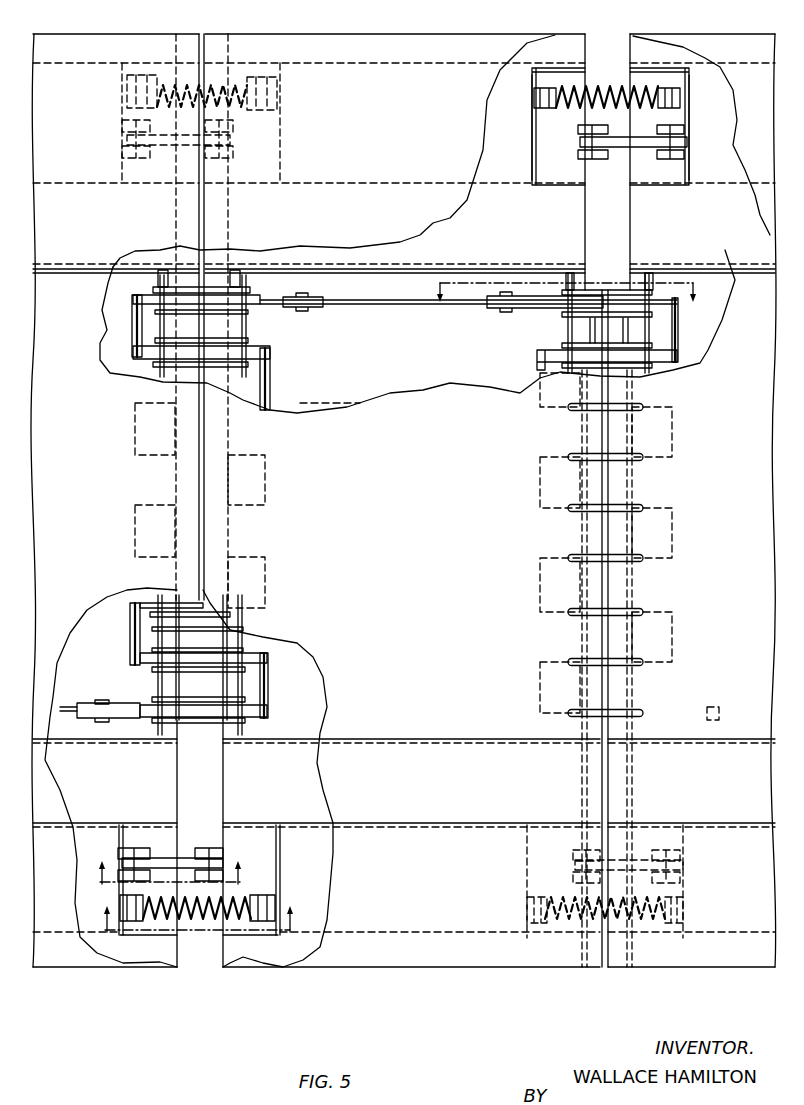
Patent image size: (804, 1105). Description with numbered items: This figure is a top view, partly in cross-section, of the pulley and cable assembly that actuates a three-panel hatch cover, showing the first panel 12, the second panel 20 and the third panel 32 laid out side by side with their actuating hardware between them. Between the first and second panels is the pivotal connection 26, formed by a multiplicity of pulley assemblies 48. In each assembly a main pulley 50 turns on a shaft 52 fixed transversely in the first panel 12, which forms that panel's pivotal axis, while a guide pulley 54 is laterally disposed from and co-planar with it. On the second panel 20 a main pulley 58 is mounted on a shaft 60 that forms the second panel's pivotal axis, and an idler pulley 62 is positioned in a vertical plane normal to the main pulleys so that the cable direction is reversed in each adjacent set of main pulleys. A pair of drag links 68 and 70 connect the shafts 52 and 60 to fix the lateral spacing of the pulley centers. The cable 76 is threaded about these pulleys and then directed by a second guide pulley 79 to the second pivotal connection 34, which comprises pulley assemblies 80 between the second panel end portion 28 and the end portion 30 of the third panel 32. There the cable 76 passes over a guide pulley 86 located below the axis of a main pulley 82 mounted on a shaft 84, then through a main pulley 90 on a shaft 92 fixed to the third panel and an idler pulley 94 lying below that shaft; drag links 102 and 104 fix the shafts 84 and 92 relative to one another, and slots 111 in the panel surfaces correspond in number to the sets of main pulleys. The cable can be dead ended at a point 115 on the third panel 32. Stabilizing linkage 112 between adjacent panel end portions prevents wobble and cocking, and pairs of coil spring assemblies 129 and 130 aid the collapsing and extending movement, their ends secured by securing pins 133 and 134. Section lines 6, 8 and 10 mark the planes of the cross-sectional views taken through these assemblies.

The section line 6- 6 is at (562, 289).
The section line 8- 8 is at (167, 874).
The section line 10- 10 is at (197, 919).
The first panel 12 is at (64, 501).
The second panel 20 is at (394, 501).
The pivotal connection 26 is at (297, 366).
The second panel end portion 28 is at (512, 224).
The end portion of the third panel 30 is at (661, 224).
The third panel 32 is at (724, 506).
The second pivotal connection 34 is at (514, 346).
The pulley assemblies 48 is at (210, 266).
The main pulley 50 is at (152, 287).
The shaft 52 is at (156, 372).
The guide pulley 54 is at (105, 706).
The main pulley 58 is at (252, 302).
The shaft 60 is at (248, 288).
The idler pulley 62 is at (132, 340).
The drag link 68 is at (215, 302).
The drag link 70 is at (185, 285).
The cable 76 is at (380, 306).
The second guide pulley 79 is at (312, 308).
The pulley assemblies 80 is at (606, 281).
The main pulley 82 is at (565, 290).
The shaft 84 is at (573, 290).
The guide pulley 86 is at (500, 309).
The main pulley 90 is at (674, 298).
The shaft 92 is at (650, 290).
The idler pulley 94 is at (678, 350).
The drag link 102 is at (590, 289).
The drag link 104 is at (623, 313).
The slots 111 is at (622, 506).
The stabilizing linkage 112 is at (236, 129).
The point 115 is at (720, 708).
The coil spring assembly 129 is at (205, 924).
The coil spring assembly 130 is at (189, 78).
The securing pin 133 is at (535, 922).
The spring nut 134 is at (668, 922).